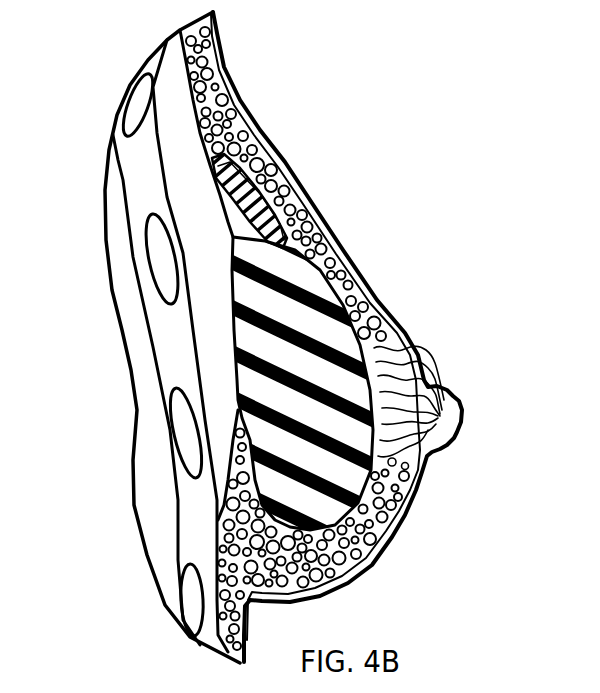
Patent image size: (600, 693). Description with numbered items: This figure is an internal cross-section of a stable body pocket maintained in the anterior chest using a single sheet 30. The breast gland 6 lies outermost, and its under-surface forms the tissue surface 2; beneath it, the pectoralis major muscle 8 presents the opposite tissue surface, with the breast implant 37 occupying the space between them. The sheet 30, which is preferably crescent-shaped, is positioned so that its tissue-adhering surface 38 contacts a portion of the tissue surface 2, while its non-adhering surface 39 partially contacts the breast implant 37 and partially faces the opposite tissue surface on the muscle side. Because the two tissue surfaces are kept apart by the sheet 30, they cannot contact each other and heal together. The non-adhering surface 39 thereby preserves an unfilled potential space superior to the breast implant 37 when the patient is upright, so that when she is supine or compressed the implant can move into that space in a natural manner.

The tissue surface 2 is at (58, 205).
The breast gland 6 is at (330, 273).
The pectoralis major muscle 8 is at (217, 338).
The sheet 30 is at (245, 178).
The breast implant 37 is at (300, 362).
The tissue-adhering surface 38 is at (250, 180).
The non-adhering surface 39 is at (233, 213).